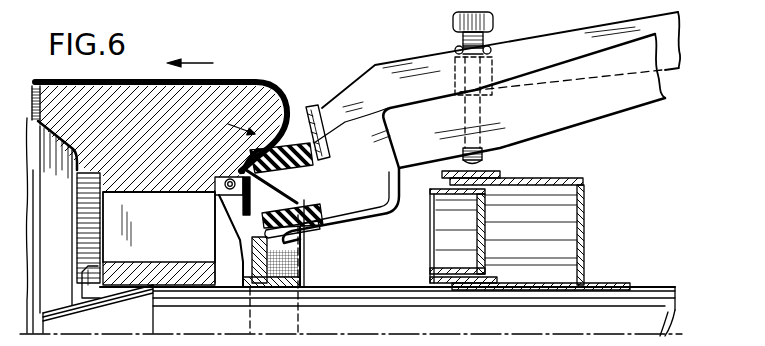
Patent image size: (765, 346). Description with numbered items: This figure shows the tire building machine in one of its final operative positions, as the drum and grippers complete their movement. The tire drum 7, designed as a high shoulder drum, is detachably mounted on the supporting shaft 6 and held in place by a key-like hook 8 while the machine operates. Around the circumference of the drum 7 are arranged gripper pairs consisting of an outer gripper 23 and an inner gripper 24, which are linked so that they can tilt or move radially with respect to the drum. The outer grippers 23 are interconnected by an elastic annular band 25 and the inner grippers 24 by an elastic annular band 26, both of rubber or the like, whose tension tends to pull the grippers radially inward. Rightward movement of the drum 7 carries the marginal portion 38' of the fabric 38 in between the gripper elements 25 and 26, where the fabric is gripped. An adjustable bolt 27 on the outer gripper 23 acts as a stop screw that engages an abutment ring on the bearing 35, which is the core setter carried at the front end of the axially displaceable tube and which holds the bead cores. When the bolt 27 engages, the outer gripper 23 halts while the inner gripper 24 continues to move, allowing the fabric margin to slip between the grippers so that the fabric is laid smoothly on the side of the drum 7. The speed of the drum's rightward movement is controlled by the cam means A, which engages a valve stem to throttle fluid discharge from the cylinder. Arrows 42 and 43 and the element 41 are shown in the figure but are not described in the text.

The supporting shaft 6 is at (394, 297).
The tire drum 7 is at (58, 117).
The key-like hook 8 is at (82, 283).
The outer gripper 23 is at (362, 93).
The inner gripper 24 is at (418, 148).
The elastic annular band 25 is at (330, 150).
The elastic annular band 26 is at (313, 205).
The adjustable bolt 27 is at (486, 154).
The bearing 35 is at (563, 178).
The fabric 38 is at (174, 114).
The marginal portion of fabric 38' is at (287, 198).
The pawl 41 is at (280, 234).
The direction arrow 42 is at (228, 123).
The direction arrow 43 is at (204, 62).
The cam means A is at (243, 159).